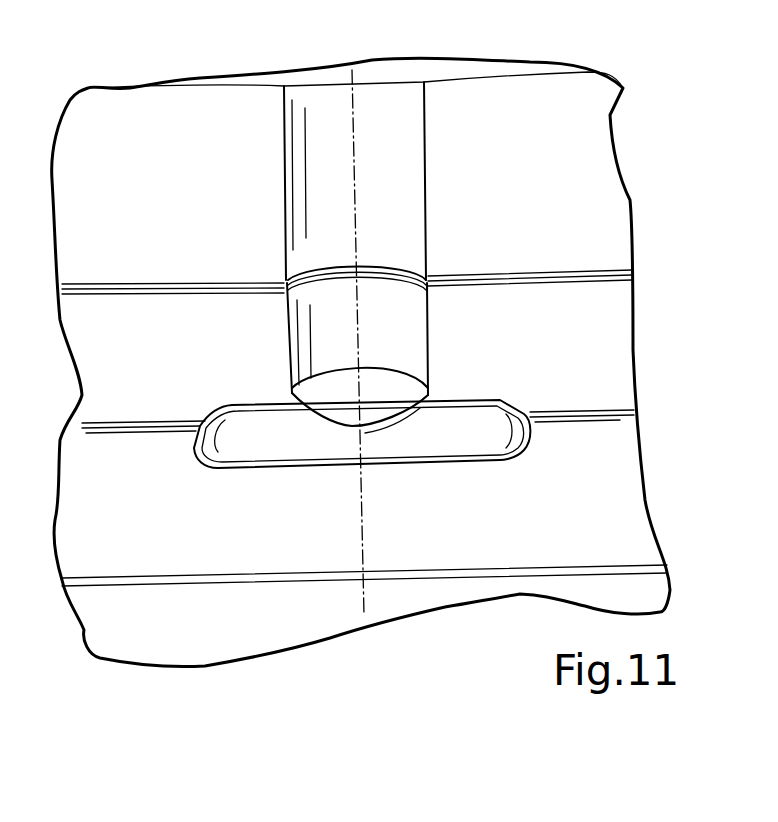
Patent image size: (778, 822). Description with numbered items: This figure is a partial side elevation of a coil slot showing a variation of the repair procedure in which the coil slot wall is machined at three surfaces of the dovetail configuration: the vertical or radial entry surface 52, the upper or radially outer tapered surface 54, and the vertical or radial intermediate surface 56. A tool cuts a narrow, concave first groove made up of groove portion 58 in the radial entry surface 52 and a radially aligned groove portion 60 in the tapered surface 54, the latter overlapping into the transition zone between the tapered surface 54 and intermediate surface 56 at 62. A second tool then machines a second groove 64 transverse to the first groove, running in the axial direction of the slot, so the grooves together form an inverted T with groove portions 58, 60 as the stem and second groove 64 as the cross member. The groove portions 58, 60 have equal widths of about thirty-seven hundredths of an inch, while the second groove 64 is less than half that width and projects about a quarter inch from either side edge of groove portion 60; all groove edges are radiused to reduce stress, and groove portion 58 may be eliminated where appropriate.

The radial entry surface 52 is at (525, 110).
The radially outer tapered surface 54 is at (598, 310).
The radial intermediate surface 56 is at (612, 492).
The groove portion 58 is at (322, 110).
The radially aligned groove portion 60 is at (413, 312).
The transition zone 62 is at (338, 393).
The second groove 64 is at (405, 448).